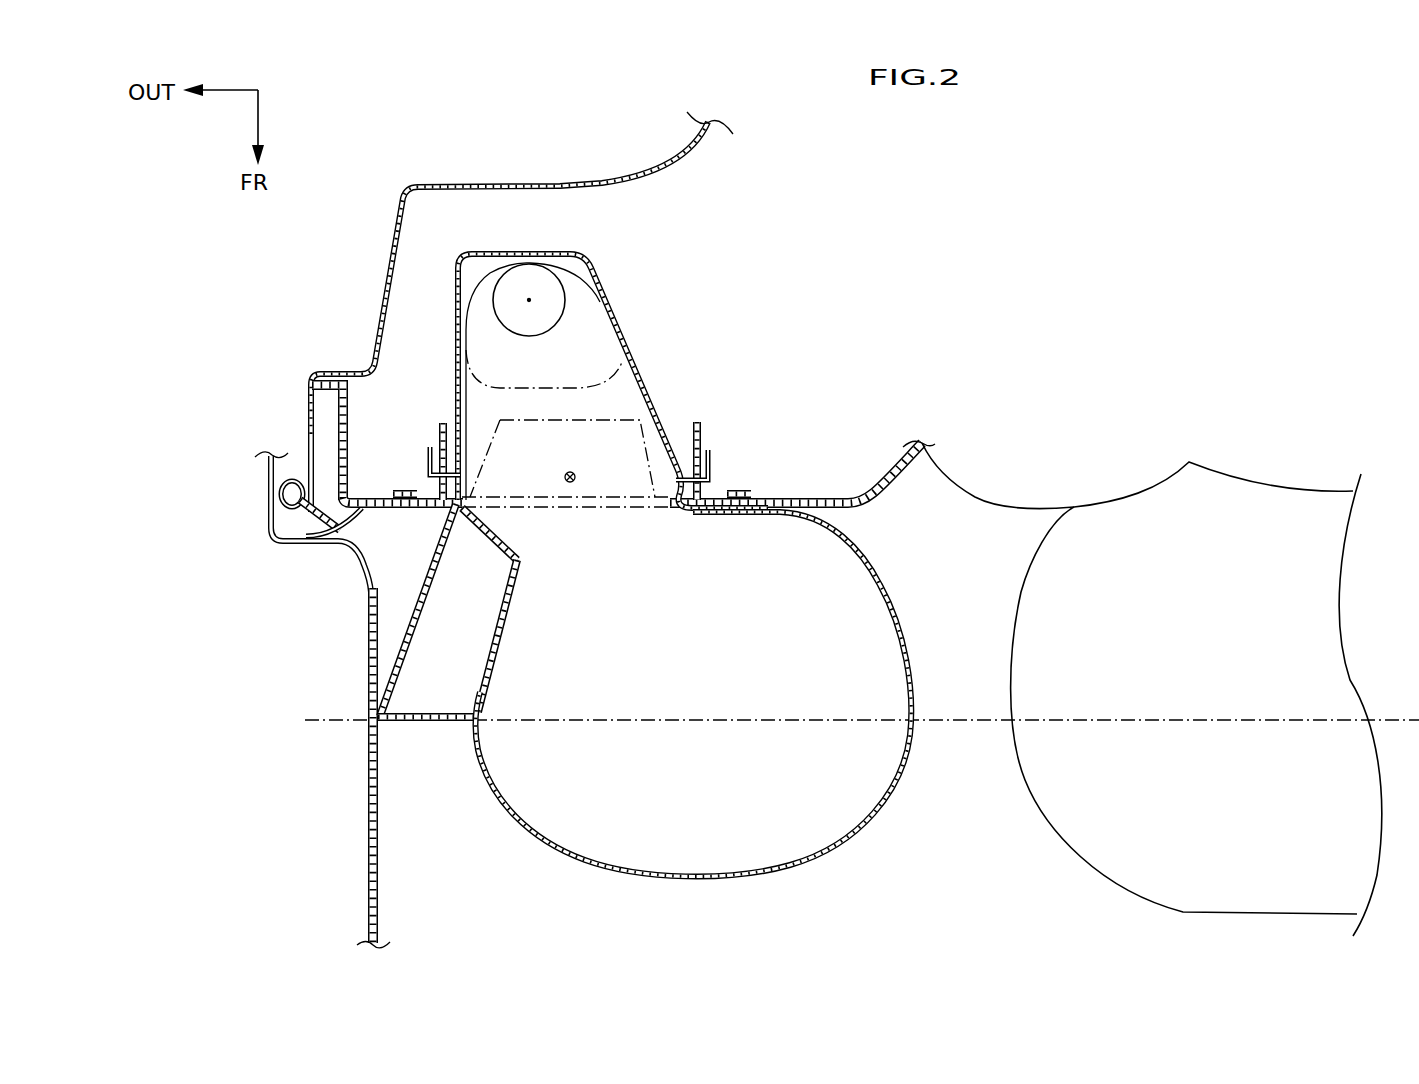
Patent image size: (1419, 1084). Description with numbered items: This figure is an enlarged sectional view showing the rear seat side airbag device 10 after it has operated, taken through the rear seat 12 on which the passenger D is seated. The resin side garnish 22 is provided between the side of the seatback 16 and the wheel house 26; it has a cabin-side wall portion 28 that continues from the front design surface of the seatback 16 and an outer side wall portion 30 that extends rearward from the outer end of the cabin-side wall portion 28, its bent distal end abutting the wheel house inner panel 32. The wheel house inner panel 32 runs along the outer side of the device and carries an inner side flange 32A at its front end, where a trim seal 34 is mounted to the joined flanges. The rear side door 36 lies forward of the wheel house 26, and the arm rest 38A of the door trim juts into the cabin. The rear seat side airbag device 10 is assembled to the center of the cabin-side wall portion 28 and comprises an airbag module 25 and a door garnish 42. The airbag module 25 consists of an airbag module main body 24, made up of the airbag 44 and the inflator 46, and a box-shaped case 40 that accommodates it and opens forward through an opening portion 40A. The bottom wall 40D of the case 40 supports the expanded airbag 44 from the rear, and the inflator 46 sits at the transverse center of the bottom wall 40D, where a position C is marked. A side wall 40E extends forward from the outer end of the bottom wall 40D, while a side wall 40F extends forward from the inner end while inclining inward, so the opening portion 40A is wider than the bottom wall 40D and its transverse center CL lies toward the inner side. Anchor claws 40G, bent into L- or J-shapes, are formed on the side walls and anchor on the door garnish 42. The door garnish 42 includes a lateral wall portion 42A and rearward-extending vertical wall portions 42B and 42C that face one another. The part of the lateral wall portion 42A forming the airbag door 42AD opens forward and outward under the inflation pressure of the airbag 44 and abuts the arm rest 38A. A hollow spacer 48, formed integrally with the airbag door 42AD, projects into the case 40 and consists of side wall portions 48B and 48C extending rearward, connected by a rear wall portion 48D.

The rear seat side airbag device 10 is at (705, 410).
The rear seat 12 is at (987, 524).
The seatback 16 is at (1152, 689).
The side garnish 22 is at (873, 505).
The airbag module main body 24 is at (560, 396).
The airbag module 25 is at (618, 292).
The wheel house 26 is at (389, 280).
The cabin-side wall portion 28 is at (800, 496).
The outer side wall portion 30 is at (348, 427).
The wheel house inner panel 32 is at (380, 340).
The inner side flange 32A is at (309, 488).
The trim seal 34 is at (358, 518).
The rear side door 36 is at (369, 700).
The arm rest 38A is at (380, 792).
The case 40 is at (578, 400).
The opening portion 40A is at (658, 496).
The bottom wall 40D is at (508, 253).
The side wall 40E is at (455, 300).
The side wall 40F is at (630, 357).
The anchor claws 40G is at (428, 462).
The door garnish 42 is at (610, 544).
The lateral wall portion 42A is at (425, 510).
The airbag door 42AD is at (405, 628).
The vertical wall portion 42B is at (443, 422).
The vertical wall portion 42C is at (702, 430).
The airbag 44 is at (858, 828).
The inflator 46 is at (544, 334).
The spacer 48 is at (505, 681).
The side wall portion 48B is at (500, 541).
The side wall portion 48C is at (448, 722).
The rear wall portion 48D is at (505, 614).
The inflator center C is at (529, 301).
The vehicle transverse direction center CL is at (565, 477).
The passenger D is at (1078, 841).